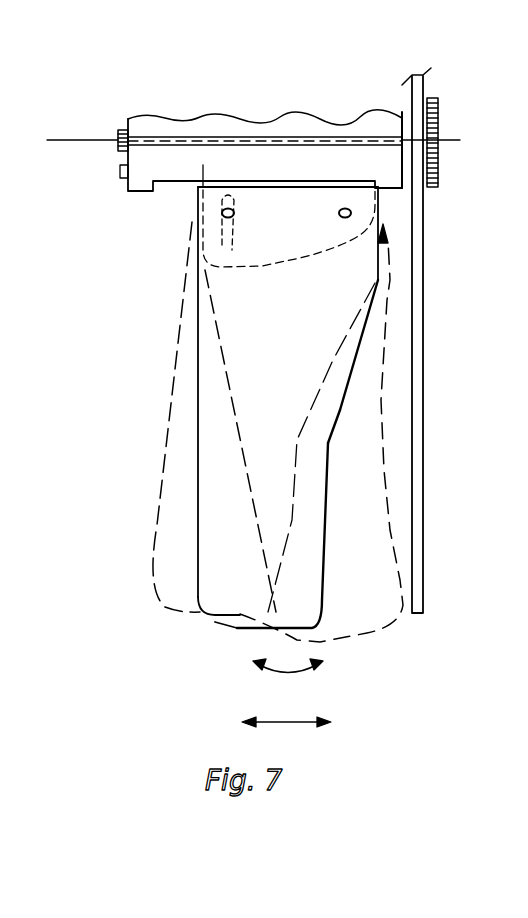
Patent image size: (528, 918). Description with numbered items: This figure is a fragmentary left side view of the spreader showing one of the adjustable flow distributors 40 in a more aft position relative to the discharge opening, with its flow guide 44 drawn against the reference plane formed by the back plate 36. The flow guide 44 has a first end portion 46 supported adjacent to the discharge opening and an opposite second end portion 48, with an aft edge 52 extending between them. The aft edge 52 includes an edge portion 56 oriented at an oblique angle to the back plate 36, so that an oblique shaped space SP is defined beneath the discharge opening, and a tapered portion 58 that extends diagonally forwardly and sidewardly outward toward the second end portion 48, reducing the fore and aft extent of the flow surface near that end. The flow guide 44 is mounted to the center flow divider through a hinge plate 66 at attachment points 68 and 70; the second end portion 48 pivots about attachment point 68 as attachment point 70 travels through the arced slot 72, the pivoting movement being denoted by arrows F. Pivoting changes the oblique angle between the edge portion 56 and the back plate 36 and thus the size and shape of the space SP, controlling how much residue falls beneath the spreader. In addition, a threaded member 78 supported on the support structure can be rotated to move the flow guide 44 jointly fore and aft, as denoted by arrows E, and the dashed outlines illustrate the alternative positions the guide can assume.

The back plate 36 is at (424, 393).
The flow distributor 40 is at (230, 632).
The flow guide 44 is at (217, 505).
The first end portion 46 is at (232, 290).
The second end portion 48 is at (213, 626).
The aft edge 52 is at (323, 582).
The edge portion 56 is at (329, 445).
The tapered portion 58 is at (345, 388).
The hinge plate 66 is at (297, 252).
The attachment point 68 is at (348, 207).
The attachment point 70 is at (233, 208).
The arced slot 72 is at (233, 238).
The threaded member 78 is at (118, 147).
The oblique shaped space SP is at (408, 495).
The arrows F is at (288, 681).
The arrows E is at (286, 734).